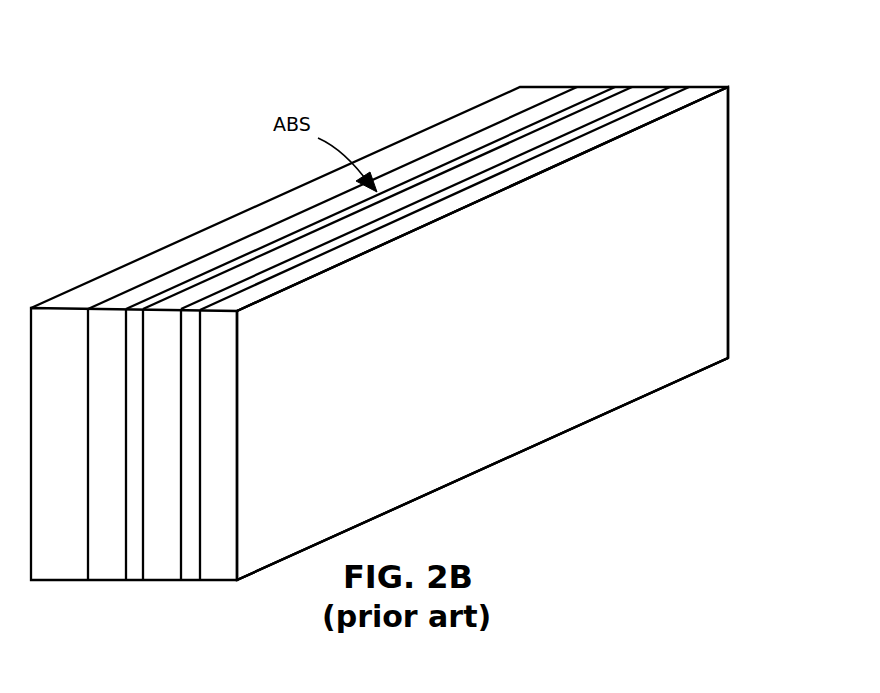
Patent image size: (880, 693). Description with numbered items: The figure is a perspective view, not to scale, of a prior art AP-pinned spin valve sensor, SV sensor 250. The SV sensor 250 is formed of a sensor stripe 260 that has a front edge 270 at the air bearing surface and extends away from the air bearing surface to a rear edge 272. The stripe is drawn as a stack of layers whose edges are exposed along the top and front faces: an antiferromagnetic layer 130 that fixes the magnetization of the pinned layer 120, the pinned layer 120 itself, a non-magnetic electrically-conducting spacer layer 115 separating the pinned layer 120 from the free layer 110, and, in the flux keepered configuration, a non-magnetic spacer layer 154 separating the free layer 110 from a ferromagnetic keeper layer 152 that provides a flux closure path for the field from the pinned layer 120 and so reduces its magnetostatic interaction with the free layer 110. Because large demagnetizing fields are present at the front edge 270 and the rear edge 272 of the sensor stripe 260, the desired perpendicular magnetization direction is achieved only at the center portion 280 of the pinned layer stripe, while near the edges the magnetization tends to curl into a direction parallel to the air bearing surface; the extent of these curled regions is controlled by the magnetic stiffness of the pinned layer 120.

The SV sensor 250 is at (567, 493).
The antiferromagnetic layer 130 is at (541, 87).
The pinned layer 120 is at (589, 87).
The spacer layer 115 is at (613, 87).
The free layer 110 is at (643, 87).
The non-magnetic spacer layer 154 is at (673, 87).
The keeper layer 152 is at (708, 87).
The sensor stripe 260 is at (728, 176).
The front edge 270 is at (403, 233).
The rear edge 272 is at (508, 453).
The center portion 280 is at (512, 323).